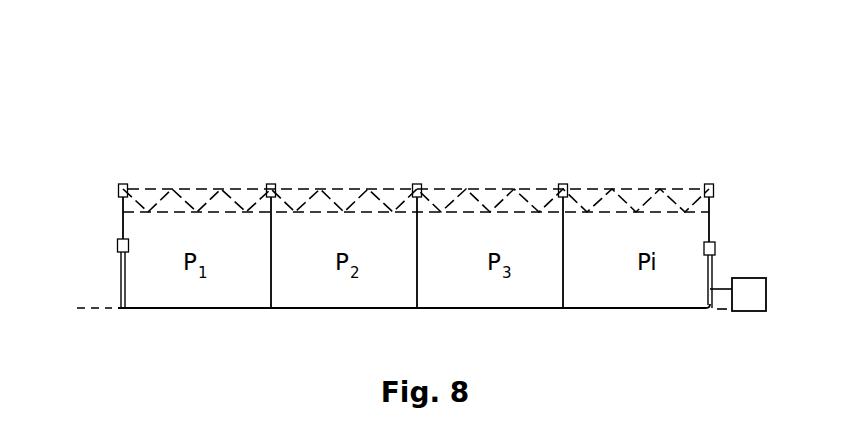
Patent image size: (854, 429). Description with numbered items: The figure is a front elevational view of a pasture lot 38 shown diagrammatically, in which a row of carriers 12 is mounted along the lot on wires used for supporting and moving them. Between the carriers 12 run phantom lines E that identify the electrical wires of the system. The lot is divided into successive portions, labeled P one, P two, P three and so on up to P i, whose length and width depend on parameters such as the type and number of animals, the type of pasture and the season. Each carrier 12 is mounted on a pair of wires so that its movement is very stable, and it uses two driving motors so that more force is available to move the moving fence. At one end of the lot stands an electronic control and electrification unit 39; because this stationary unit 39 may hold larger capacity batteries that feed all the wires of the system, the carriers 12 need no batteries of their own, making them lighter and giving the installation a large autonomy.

The carrier 12 is at (123, 183).
The pasture lot 38 is at (272, 95).
The electrical wires E is at (672, 217).
The electronic control and electrification unit 39 is at (758, 277).